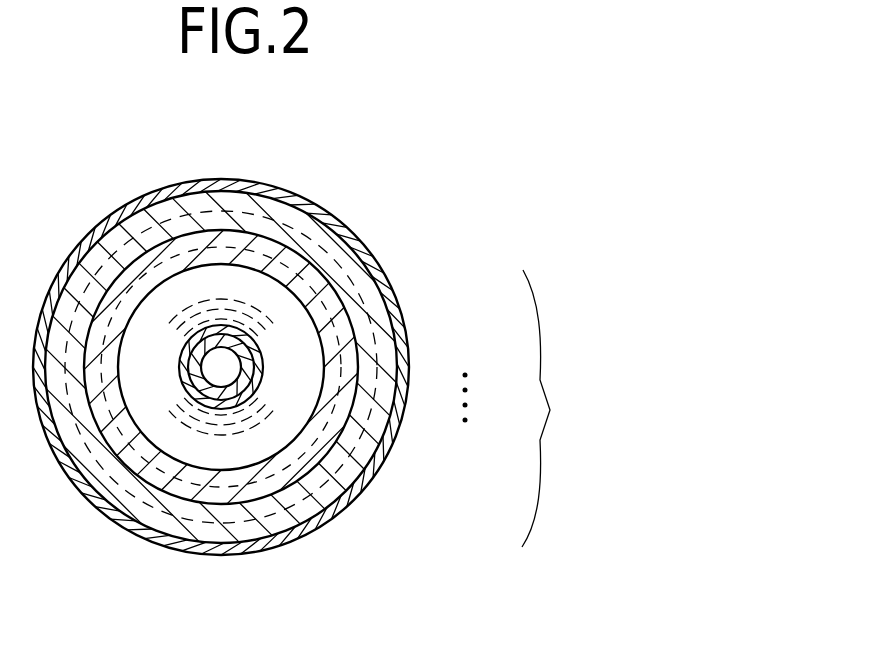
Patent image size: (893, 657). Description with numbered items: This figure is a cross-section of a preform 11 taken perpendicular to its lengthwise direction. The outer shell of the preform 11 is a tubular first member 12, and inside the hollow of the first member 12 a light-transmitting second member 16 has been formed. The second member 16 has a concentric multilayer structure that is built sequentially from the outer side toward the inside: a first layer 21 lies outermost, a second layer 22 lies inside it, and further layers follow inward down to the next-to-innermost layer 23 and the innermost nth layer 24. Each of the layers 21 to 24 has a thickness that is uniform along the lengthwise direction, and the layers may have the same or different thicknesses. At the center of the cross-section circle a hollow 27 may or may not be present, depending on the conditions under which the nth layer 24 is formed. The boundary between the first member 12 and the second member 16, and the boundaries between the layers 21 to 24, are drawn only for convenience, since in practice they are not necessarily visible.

The preform 11 is at (427, 108).
The first member 12 is at (373, 268).
The second member 16 is at (553, 408).
The first layer 21 is at (362, 307).
The second layer 22 is at (352, 342).
The (n−1)th layer 23 is at (250, 378).
The nth layer 24 is at (245, 366).
The hollow 27 is at (220, 367).